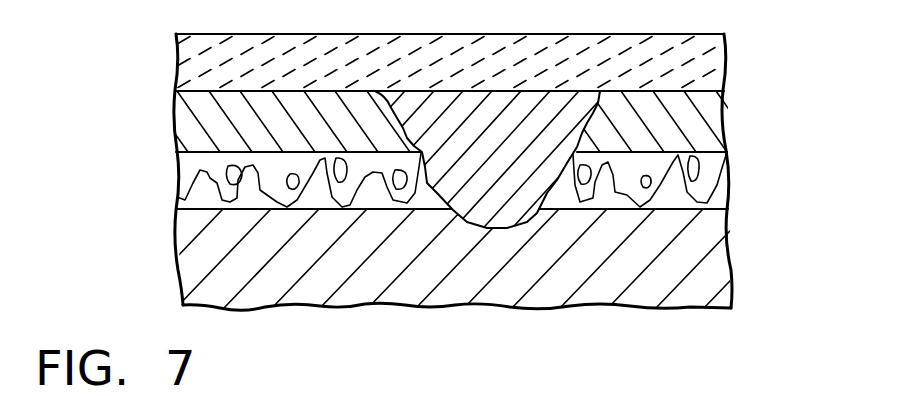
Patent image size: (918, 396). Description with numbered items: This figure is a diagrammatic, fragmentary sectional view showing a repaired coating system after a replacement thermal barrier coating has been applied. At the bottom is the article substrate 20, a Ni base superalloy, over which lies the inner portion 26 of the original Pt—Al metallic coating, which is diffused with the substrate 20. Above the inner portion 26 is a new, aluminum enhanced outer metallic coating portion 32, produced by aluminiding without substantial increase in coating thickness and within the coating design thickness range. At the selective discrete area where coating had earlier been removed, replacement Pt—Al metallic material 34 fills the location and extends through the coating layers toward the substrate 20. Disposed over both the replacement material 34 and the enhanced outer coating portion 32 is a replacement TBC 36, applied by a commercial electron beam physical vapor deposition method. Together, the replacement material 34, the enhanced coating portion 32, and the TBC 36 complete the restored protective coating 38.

The article substrate 20 is at (718, 277).
The inner portion 26 is at (716, 178).
The aluminum enhanced outer metallic coating portion 32 is at (716, 110).
The replacement Pt—Al metallic material 34 is at (522, 148).
The replacement TBC 36 is at (716, 60).
The restored protective coating 38 is at (138, 130).